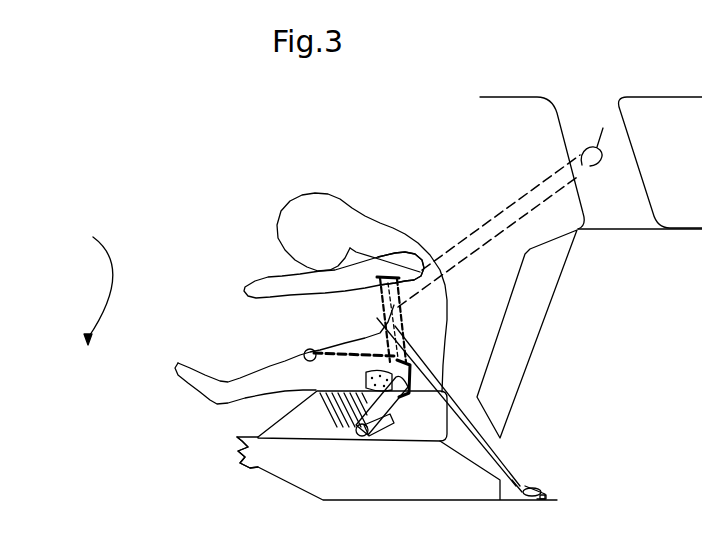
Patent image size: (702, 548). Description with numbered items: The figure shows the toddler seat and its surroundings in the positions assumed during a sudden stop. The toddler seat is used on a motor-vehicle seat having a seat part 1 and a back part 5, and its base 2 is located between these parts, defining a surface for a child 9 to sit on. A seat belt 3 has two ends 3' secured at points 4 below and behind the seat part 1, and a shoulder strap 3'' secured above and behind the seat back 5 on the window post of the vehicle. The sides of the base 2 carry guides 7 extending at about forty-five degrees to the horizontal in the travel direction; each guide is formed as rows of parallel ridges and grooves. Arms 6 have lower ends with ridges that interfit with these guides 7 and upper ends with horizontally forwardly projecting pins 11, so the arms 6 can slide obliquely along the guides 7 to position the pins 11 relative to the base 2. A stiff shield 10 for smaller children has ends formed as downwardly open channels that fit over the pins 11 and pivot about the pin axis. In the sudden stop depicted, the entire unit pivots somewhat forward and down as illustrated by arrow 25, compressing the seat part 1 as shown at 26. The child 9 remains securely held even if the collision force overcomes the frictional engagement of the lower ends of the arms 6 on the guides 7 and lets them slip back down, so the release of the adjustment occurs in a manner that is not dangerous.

The seat part 1 is at (400, 473).
The base 2 is at (414, 438).
The seat belt 3 is at (361, 337).
The ends of seat belt 3' is at (448, 402).
The shoulder strap 3'' is at (489, 231).
The securing points 4 is at (606, 100).
The back part 5 is at (547, 292).
The arms 6 is at (410, 399).
The guides 7 is at (323, 422).
The child 9 is at (391, 252).
The shield 10 is at (313, 348).
The pins 11 is at (364, 380).
The arrow 25 is at (93, 237).
The compression of seat part 26 is at (232, 452).